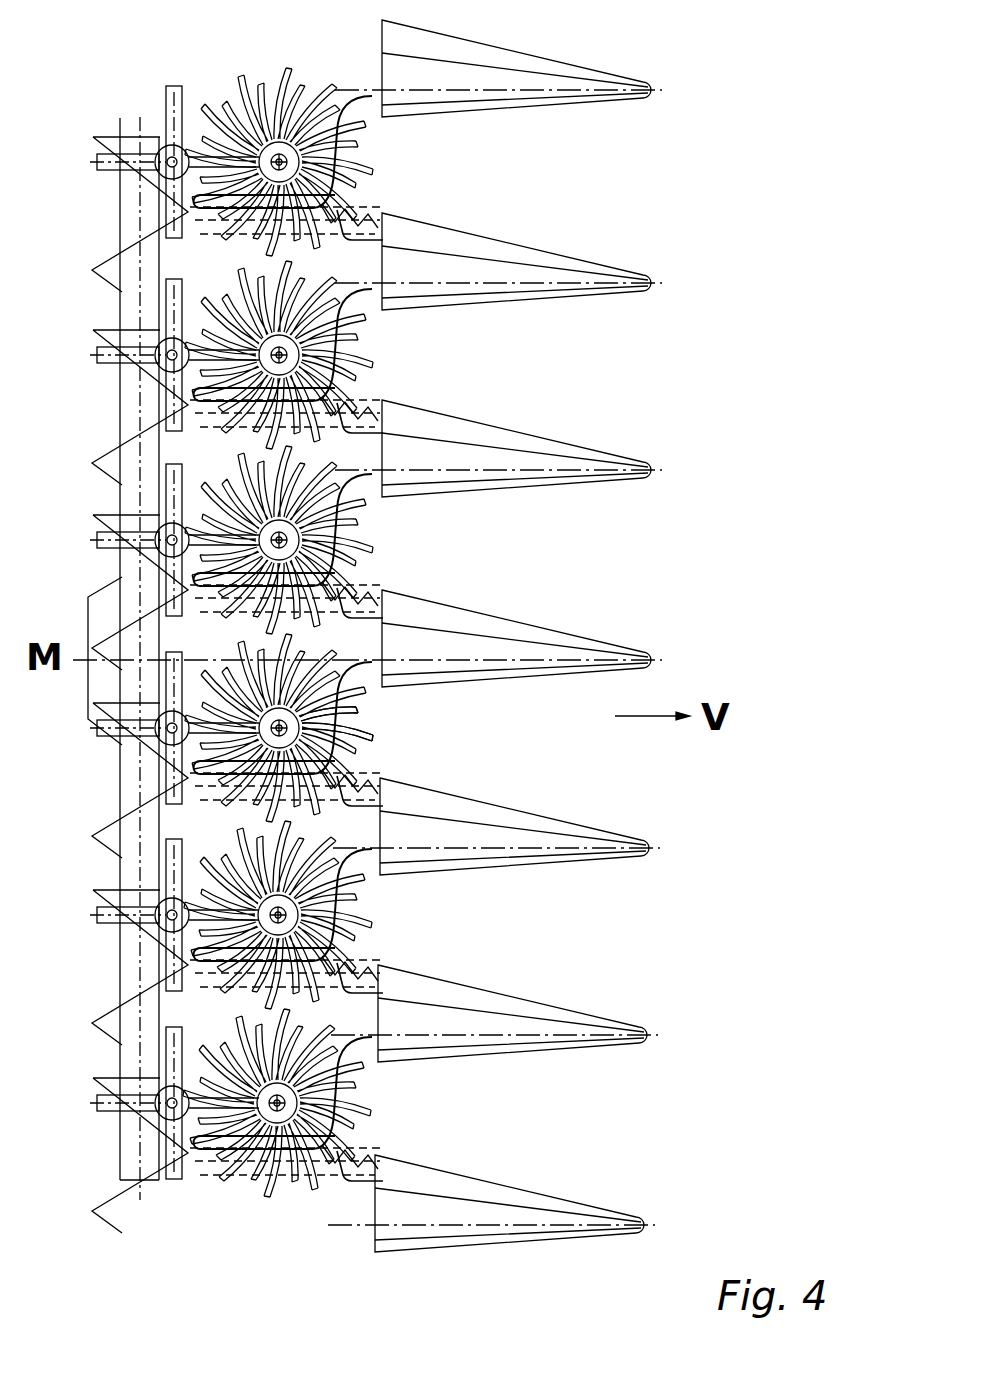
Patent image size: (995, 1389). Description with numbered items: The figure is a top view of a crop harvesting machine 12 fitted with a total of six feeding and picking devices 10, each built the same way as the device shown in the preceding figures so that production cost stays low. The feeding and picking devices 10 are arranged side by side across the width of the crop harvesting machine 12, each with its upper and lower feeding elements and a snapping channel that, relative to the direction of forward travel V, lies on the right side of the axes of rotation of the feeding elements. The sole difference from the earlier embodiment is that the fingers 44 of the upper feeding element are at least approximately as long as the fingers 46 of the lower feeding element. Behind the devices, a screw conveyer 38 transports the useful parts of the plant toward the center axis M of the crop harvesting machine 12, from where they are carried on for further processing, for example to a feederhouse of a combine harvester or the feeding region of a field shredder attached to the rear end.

The feeding and picking device 10 is at (343, 636).
The crop harvesting machine 12 is at (84, 698).
The screw conveyer 38 is at (105, 790).
The fingers 44 is at (366, 712).
The fingers 46 is at (366, 742).